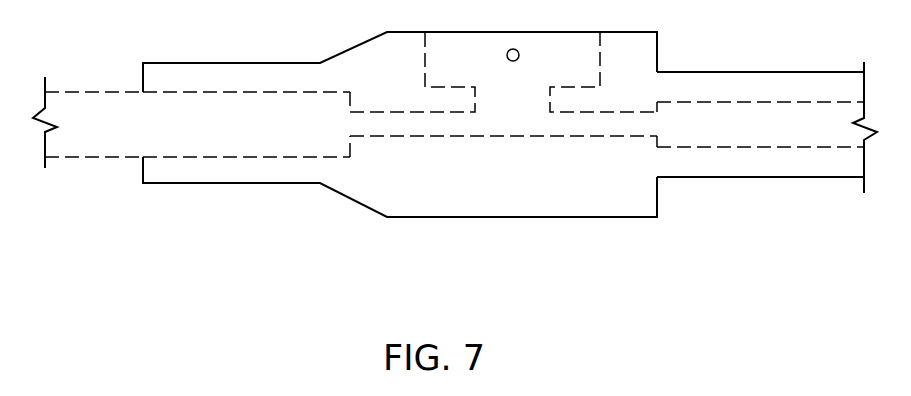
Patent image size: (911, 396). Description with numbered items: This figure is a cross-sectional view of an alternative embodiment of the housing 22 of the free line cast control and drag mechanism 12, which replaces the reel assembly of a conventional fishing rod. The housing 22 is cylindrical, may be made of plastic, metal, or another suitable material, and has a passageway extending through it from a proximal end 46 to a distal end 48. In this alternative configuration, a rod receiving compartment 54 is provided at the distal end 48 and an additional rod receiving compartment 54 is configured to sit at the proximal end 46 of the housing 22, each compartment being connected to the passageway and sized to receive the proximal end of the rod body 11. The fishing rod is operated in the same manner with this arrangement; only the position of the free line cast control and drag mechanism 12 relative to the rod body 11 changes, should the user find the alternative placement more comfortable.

The rod body 11 is at (84, 140).
The free line cast control and drag mechanism 12 is at (628, 217).
The housing 22 is at (417, 217).
The proximal end 46 is at (648, 137).
The distal end 48 is at (358, 137).
The rod receiving compartment 54 is at (257, 92).